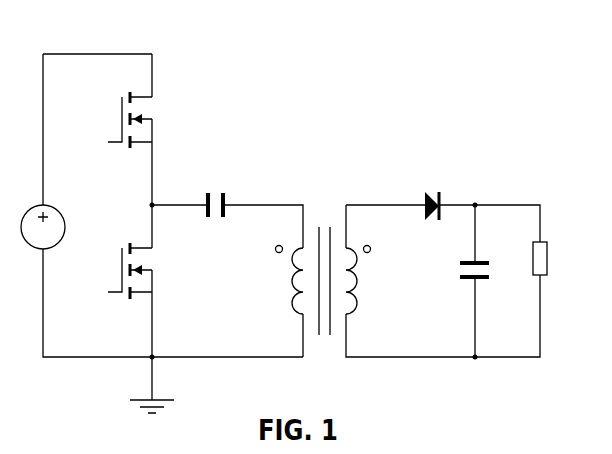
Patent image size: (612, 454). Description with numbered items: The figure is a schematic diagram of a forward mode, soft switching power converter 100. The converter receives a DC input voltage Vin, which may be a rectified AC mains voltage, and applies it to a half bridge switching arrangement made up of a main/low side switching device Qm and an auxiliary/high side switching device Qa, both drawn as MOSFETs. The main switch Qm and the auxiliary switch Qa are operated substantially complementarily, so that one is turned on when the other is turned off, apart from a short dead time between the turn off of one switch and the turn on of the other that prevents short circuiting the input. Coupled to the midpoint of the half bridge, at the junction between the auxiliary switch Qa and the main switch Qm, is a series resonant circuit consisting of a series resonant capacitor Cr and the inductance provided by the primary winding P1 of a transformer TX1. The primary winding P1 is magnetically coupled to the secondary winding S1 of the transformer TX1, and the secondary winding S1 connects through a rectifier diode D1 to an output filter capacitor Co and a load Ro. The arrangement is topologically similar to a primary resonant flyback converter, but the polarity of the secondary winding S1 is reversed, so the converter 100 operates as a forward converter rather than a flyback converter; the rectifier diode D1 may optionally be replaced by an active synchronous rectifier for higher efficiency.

The forward mode soft switching power converter 100 is at (294, 219).
The DC input voltage Vin is at (56, 217).
The auxiliary/high side switching device Qa is at (130, 131).
The main/low side switching device Qm is at (130, 282).
The series resonant capacitor Cr is at (216, 217).
The transformer TX1 is at (332, 281).
The primary winding P1 is at (282, 280).
The secondary winding S1 is at (360, 280).
The rectifier diode D1 is at (432, 219).
The output filter capacitor Co is at (485, 265).
The load Ro is at (550, 252).